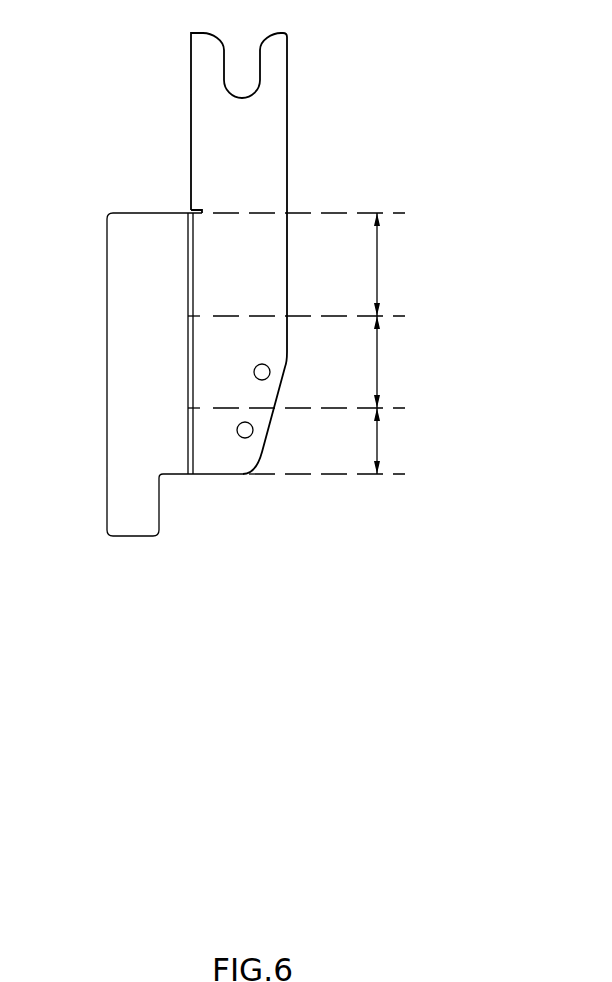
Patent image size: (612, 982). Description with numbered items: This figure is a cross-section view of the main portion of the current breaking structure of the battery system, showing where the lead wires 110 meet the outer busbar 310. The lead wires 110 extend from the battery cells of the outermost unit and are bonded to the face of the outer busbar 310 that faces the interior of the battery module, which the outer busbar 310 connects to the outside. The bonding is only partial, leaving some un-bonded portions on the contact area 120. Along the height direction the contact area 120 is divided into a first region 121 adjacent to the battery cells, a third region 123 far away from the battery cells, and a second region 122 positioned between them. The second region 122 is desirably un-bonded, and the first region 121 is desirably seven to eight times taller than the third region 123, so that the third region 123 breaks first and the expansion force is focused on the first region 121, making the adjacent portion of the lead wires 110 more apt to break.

The lead wire 110 is at (207, 139).
The contact area 120 is at (421, 259).
The first region 121 is at (303, 264).
The second region 122 is at (303, 362).
The third region 123 is at (396, 441).
The outer busbar 310 is at (128, 358).